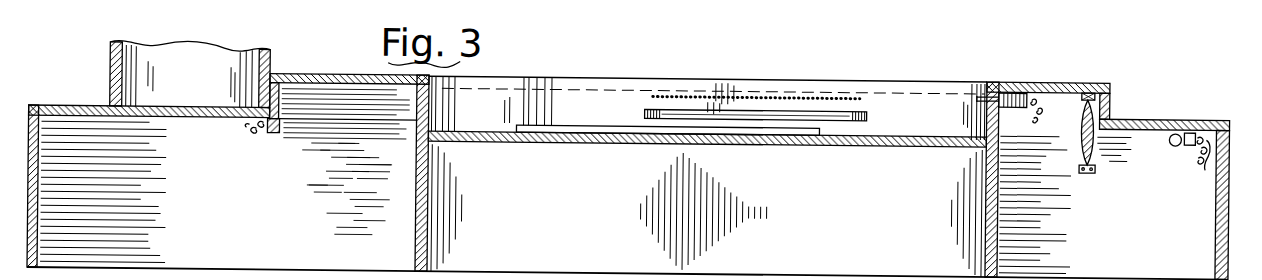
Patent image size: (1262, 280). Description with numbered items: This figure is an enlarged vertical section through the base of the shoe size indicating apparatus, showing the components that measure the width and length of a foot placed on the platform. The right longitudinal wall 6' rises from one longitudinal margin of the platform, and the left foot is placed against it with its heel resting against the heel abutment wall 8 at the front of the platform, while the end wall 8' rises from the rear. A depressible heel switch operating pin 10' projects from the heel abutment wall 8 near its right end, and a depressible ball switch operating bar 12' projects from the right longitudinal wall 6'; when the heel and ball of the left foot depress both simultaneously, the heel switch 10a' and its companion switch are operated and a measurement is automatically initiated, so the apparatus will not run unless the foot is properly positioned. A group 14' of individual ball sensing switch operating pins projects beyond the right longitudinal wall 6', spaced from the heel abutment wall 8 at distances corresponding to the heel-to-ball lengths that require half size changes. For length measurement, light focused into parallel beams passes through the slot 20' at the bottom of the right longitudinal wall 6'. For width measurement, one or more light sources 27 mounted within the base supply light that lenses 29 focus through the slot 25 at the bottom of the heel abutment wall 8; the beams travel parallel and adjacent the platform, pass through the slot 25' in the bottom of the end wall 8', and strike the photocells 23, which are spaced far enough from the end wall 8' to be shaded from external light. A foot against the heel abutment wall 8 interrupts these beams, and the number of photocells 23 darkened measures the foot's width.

The right longitudinal wall 6' is at (536, 84).
The heel abutment wall 8 is at (952, 111).
The end wall 8' is at (458, 104).
The heel switch operating pin 10' is at (975, 71).
The heel switch 10a' is at (1044, 83).
The ball switch operating bar 12' is at (756, 83).
The group of ball sensing switch operating pins 14' is at (757, 81).
The slot 20' is at (668, 157).
The photocells 23 is at (274, 131).
The slot 25 is at (713, 176).
The slot 25' is at (403, 173).
The light source 27 is at (1168, 137).
The lenses 29 is at (1081, 140).